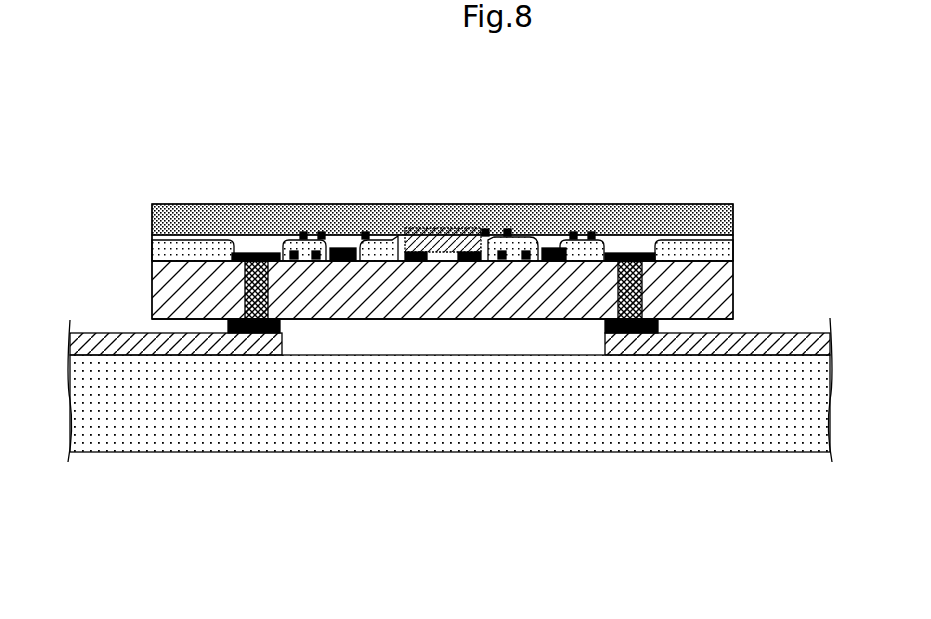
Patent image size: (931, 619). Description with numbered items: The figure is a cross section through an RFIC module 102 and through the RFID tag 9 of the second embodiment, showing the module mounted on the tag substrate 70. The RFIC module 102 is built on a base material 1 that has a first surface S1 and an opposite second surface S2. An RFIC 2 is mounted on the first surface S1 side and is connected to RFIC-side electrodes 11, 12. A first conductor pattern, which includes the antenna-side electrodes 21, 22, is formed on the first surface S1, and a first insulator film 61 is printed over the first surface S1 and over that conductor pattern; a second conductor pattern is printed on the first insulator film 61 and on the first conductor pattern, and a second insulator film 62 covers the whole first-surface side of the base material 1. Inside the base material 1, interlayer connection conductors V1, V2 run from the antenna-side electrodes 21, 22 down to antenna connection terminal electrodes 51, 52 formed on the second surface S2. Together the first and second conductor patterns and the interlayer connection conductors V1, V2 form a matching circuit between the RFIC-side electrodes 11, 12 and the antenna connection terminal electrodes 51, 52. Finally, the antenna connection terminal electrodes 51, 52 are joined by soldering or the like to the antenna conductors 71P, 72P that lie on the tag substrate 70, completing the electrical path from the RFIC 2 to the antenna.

The RFIC module 102 is at (755, 174).
The sensor assembly 9 is at (729, 494).
The base material 1 is at (727, 287).
The RFIC 2 is at (452, 233).
The RFIC-side electrode 11 is at (393, 248).
The RFIC-side electrode 12 is at (498, 240).
The antenna-side electrode 21 is at (243, 257).
The antenna-side electrode 22 is at (643, 253).
The interlayer connection conductor V1 is at (263, 258).
The interlayer connection conductor V2 is at (624, 258).
The antenna connection terminal electrode 51 is at (253, 333).
The antenna connection terminal electrode 52 is at (630, 333).
The first insulator film 61 is at (733, 250).
The second insulator film 62 is at (727, 222).
The circuit board 70 is at (440, 440).
The antenna conductor 71P is at (75, 333).
The antenna conductor 72P is at (805, 333).
The first surface S1 is at (148, 263).
The second surface S2 is at (148, 320).